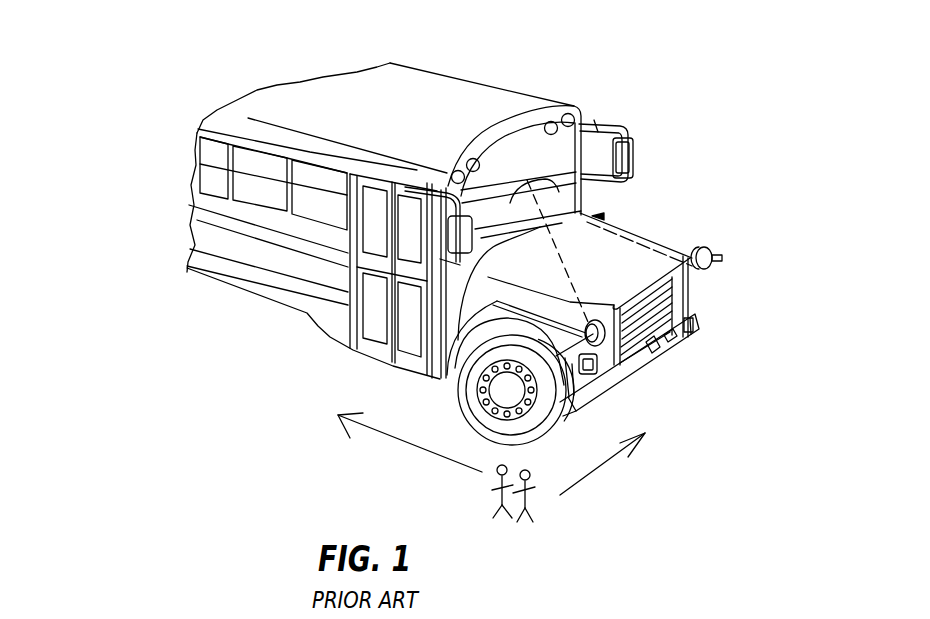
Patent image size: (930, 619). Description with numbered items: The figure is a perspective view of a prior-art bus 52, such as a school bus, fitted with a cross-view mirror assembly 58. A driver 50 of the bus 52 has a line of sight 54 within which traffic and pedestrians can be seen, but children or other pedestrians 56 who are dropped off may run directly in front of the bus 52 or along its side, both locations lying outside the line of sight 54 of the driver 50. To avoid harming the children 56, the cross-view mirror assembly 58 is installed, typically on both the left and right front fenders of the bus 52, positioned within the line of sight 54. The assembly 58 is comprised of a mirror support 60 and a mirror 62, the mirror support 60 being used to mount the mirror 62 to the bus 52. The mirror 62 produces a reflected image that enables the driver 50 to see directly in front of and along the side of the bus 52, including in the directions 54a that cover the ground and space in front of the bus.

The driver 50 is at (490, 232).
The bus 52 is at (450, 85).
The line of sight 54 is at (642, 276).
The directions 54a is at (670, 338).
The children or other pedestrians 56 is at (540, 503).
The cross-view mirror assembly 58 is at (742, 270).
The mirror support 60 is at (629, 383).
The mirror 62 is at (707, 272).